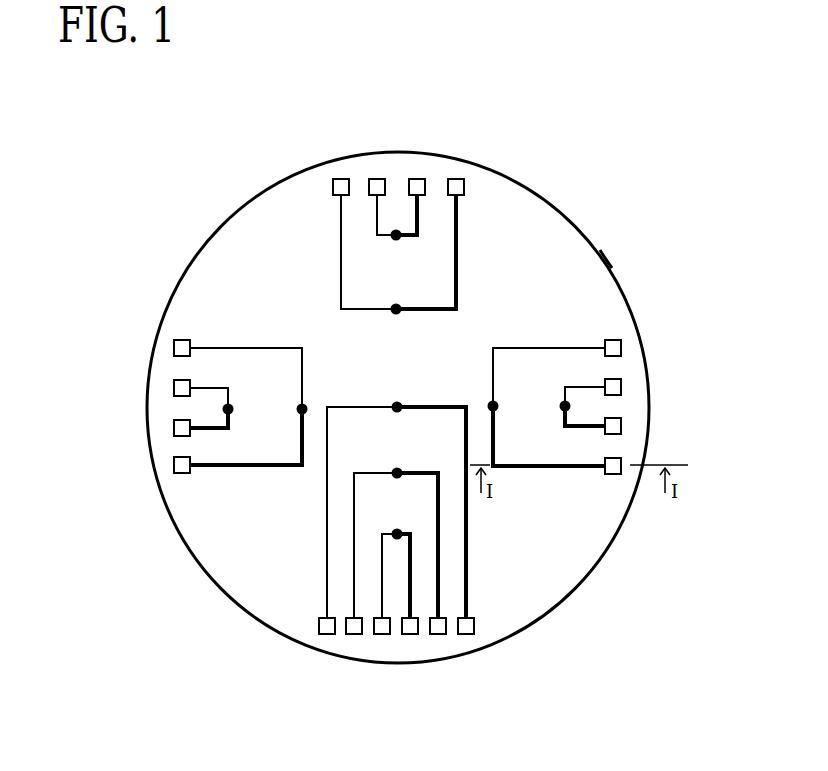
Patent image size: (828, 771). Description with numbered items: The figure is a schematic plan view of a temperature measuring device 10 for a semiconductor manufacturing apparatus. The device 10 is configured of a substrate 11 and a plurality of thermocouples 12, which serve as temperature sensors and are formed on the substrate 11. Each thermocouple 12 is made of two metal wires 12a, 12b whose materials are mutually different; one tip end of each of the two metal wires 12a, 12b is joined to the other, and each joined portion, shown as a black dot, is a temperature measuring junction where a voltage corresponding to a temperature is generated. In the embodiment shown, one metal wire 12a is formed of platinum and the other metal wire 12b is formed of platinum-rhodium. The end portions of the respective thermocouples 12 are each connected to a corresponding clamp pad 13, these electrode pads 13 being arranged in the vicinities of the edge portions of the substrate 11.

The temperature measuring device 10 is at (250, 191).
The substrate 11 is at (612, 268).
The thermocouple 12 is at (301, 402).
The metal wire 12a is at (417, 222).
The metal wire 12b is at (341, 212).
The clamp pad 13 is at (377, 179).